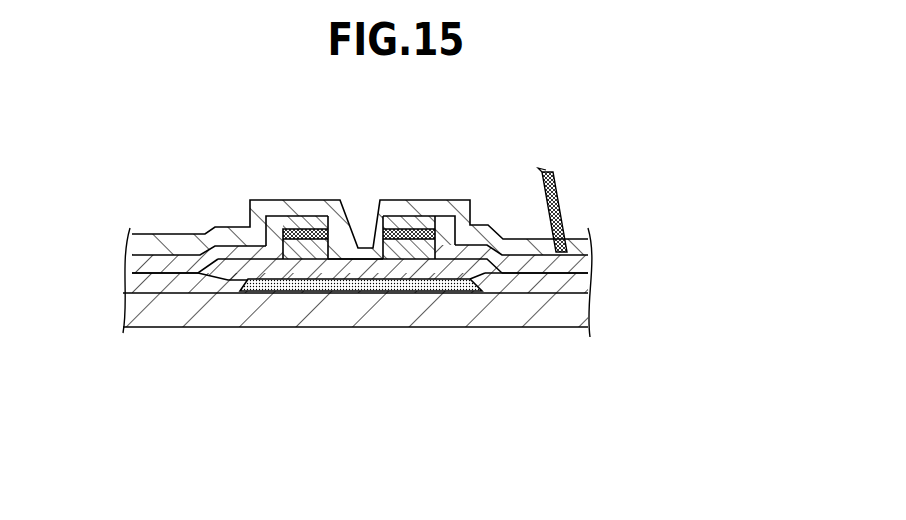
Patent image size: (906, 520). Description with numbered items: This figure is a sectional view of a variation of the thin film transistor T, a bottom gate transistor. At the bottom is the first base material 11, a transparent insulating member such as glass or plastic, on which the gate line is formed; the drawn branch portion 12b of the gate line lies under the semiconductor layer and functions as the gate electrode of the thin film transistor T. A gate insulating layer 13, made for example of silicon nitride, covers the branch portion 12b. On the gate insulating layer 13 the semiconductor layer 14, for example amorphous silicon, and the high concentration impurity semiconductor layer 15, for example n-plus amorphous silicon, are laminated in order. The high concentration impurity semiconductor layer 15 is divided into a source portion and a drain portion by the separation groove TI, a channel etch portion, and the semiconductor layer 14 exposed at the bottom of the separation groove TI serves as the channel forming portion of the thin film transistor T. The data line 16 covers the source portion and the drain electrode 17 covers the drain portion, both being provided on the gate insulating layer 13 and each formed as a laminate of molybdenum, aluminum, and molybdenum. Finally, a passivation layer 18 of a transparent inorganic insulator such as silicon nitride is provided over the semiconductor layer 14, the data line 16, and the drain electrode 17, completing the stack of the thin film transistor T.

The first base material 11 is at (585, 310).
The gate insulating layer 13 is at (585, 284).
The branch portion 12b is at (337, 287).
The semiconductor layer 14 is at (398, 258).
The high concentration impurity semiconductor layer 15 is at (315, 248).
The data line 16 is at (210, 262).
The drain electrode 17 is at (525, 263).
The passivation layer 18 is at (425, 210).
The separation groove TI is at (363, 273).
The thin film transistor T is at (565, 414).